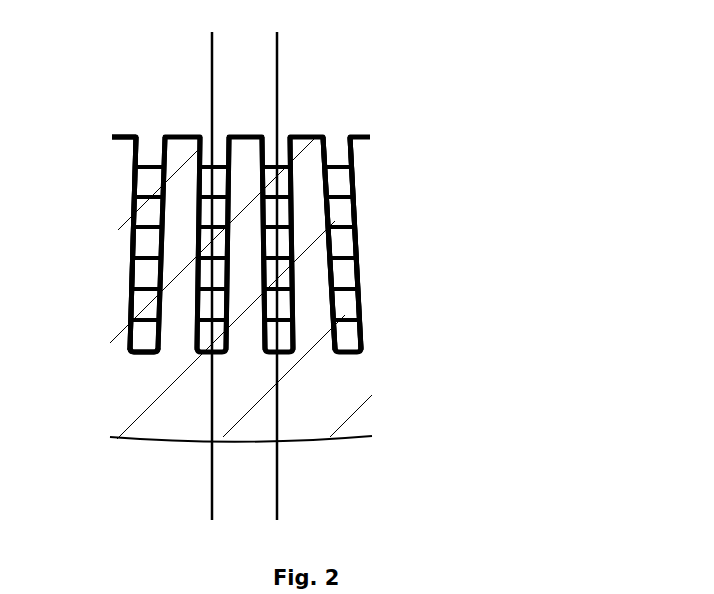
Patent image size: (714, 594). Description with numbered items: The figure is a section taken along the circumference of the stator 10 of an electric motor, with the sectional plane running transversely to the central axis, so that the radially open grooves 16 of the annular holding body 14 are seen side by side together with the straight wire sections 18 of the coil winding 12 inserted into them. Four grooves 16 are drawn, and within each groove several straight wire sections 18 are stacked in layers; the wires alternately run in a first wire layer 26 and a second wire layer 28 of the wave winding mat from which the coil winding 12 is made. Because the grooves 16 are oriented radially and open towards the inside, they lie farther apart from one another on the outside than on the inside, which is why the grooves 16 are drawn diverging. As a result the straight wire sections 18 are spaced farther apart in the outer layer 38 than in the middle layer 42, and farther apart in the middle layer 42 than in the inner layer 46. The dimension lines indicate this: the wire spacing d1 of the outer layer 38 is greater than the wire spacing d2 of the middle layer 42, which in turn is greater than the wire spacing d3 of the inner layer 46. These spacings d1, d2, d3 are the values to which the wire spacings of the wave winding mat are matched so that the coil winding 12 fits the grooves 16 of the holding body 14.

The stator 10 is at (540, 325).
The coil winding 12 is at (362, 212).
The holding body 14 is at (350, 420).
The radially open grooves 16 is at (147, 138).
The straight wire sections 18 is at (132, 278).
The first wire layer 26 is at (354, 207).
The second wire layer 28 is at (332, 173).
The outer layer 38 is at (128, 327).
The middle layer 42 is at (133, 243).
The inner layer 46 is at (134, 191).
The wire spacing d1 is at (175, 510).
The wire spacing d2 is at (178, 243).
The wire spacing d3 is at (475, 42).